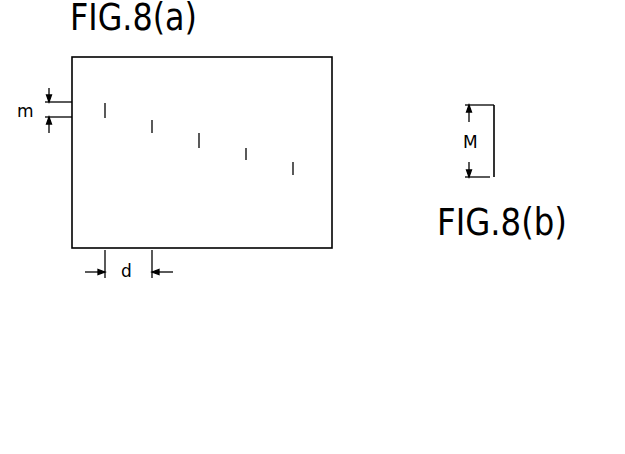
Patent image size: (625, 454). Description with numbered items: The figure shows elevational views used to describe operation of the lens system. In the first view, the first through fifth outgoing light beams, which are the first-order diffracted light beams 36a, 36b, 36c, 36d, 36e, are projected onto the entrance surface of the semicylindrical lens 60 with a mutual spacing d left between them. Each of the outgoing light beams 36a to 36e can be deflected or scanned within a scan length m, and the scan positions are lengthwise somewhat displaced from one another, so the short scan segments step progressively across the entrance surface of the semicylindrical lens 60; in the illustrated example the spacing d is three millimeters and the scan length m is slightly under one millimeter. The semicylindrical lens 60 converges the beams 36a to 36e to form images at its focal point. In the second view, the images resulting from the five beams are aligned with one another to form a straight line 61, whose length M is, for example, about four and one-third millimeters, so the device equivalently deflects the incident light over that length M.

In FIG. 8A, the semicylindrical lens 60 is at (332, 103).
In FIG. 8A, the first outgoing light beam 36a is at (105, 103).
In FIG. 8A, the second outgoing light beam 36b is at (152, 120).
In FIG. 8A, the third outgoing light beam 36c is at (199, 133).
In FIG. 8A, the fourth outgoing light beam 36d is at (246, 148).
In FIG. 8A, the fifth outgoing light beam 36e is at (293, 162).
In FIG. 8B, the straight line 61 is at (494, 138).